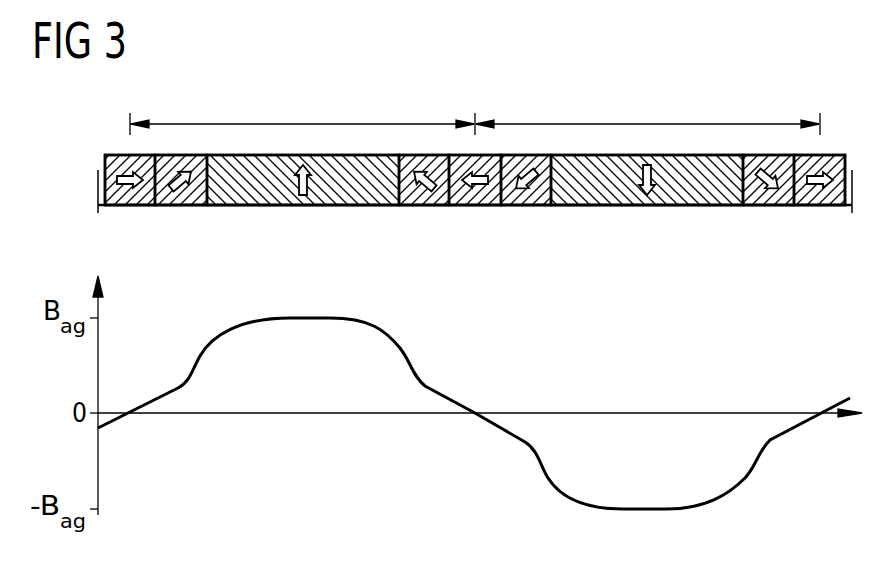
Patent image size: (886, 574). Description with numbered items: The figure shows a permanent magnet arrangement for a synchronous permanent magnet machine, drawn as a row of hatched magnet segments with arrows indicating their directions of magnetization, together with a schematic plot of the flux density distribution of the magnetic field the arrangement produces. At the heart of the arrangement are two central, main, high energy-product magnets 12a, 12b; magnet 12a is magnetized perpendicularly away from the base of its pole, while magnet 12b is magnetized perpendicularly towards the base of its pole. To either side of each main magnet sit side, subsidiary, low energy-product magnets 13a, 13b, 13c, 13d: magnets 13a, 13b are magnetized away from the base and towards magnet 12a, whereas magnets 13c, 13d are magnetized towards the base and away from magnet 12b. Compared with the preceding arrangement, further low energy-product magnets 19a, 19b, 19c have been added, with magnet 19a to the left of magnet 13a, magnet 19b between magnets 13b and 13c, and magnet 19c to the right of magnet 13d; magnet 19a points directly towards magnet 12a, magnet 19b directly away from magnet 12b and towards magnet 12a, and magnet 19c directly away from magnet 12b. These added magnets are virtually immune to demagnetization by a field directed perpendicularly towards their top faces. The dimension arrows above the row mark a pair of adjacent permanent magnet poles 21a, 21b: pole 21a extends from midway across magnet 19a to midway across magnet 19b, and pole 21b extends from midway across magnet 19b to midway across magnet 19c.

The high energy-product magnet 12a is at (280, 206).
The high energy-product magnet 12b is at (626, 206).
The low energy-product magnet 13a is at (187, 206).
The low energy-product magnet 13b is at (417, 206).
The low energy-product magnet 13c is at (536, 206).
The low energy-product magnet 13d is at (763, 206).
The low energy-product magnet 19a is at (128, 206).
The low energy-product magnet 19b is at (480, 206).
The low energy-product magnet 19c is at (827, 206).
The permanent magnet pole 21a is at (297, 122).
The permanent magnet pole 21b is at (647, 122).